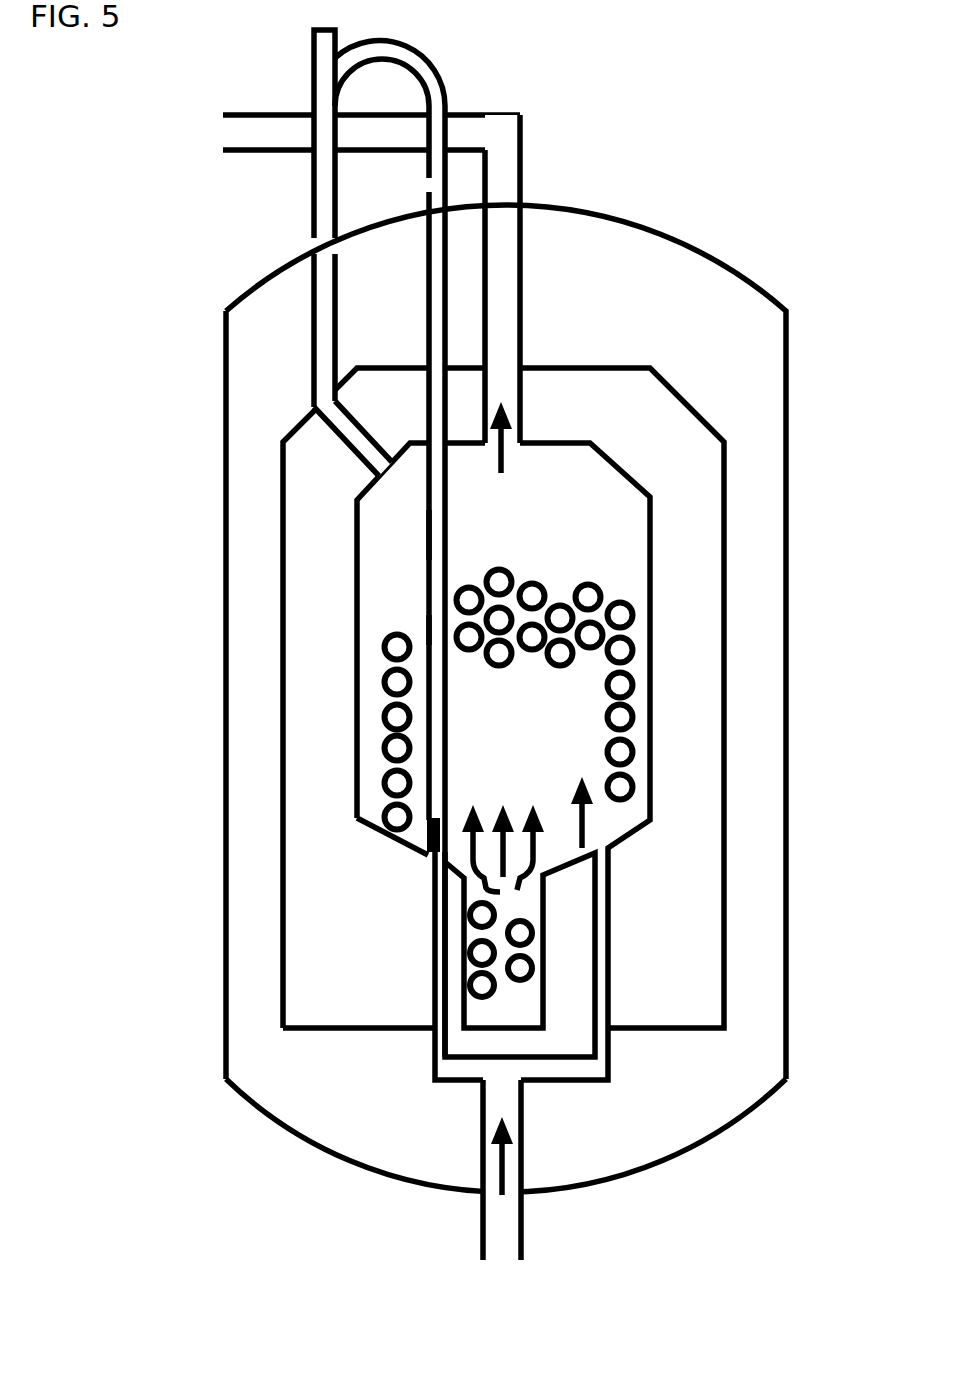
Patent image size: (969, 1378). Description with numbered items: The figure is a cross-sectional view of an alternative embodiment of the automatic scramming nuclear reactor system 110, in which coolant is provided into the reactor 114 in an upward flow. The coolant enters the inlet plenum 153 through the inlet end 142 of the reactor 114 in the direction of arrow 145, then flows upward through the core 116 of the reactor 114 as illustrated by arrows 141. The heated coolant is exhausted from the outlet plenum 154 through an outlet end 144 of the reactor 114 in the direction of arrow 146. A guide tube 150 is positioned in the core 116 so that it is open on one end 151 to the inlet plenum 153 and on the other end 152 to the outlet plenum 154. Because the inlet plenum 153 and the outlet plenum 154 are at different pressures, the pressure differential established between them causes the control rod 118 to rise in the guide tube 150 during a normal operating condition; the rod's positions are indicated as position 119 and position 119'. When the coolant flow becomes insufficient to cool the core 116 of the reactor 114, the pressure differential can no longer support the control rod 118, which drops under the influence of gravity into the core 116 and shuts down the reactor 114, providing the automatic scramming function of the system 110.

The automatic scramming nuclear reactor system 110 is at (644, 206).
The reactor 114 is at (788, 542).
The core 116 is at (653, 588).
The control rod 118 is at (433, 628).
The position 119 is at (379, 440).
The position 119' is at (431, 750).
The arrows 141 is at (527, 887).
The inlet end 142 is at (523, 1207).
The outlet end 144 is at (527, 323).
The arrow 145 is at (505, 1172).
The arrow 146 is at (503, 465).
The guide tube 150 is at (423, 533).
The end 151 is at (424, 858).
The end 152 is at (380, 468).
The inlet plenum 153 is at (500, 1082).
The outlet plenum 154 is at (617, 496).